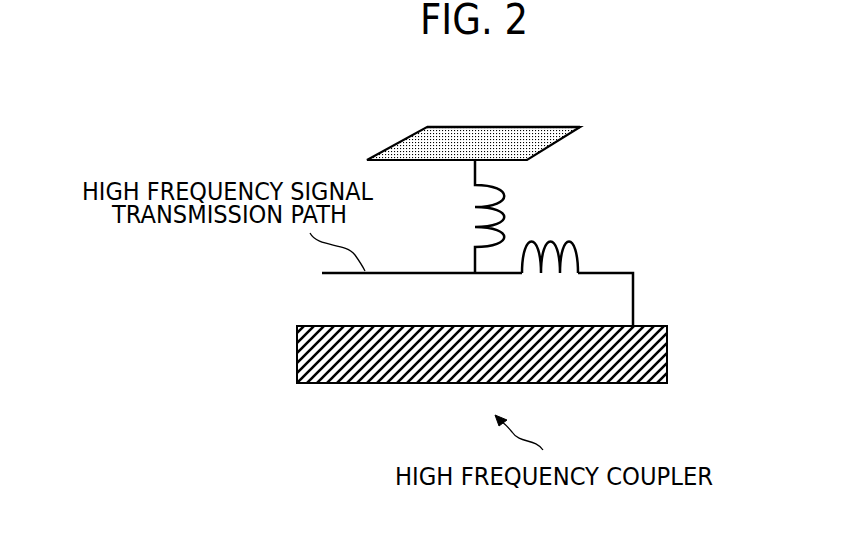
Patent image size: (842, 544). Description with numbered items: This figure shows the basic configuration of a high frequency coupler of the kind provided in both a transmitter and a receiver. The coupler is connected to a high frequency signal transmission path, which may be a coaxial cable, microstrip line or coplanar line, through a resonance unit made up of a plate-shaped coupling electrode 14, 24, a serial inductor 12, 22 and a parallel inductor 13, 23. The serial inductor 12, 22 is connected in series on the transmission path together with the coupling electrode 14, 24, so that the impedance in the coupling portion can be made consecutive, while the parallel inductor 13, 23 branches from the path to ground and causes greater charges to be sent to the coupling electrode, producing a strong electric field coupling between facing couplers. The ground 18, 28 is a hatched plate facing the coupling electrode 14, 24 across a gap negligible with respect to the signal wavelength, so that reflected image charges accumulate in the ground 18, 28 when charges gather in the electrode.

The plate-shaped electrode 14 is at (495, 124).
The plate-shaped electrode 24 is at (523, 127).
The serial inductor 12 is at (543, 216).
The serial inductor 22 is at (505, 213).
The parallel inductor 13 is at (605, 254).
The parallel inductor 23 is at (580, 253).
The ground 18 is at (426, 354).
The ground 28 is at (297, 356).